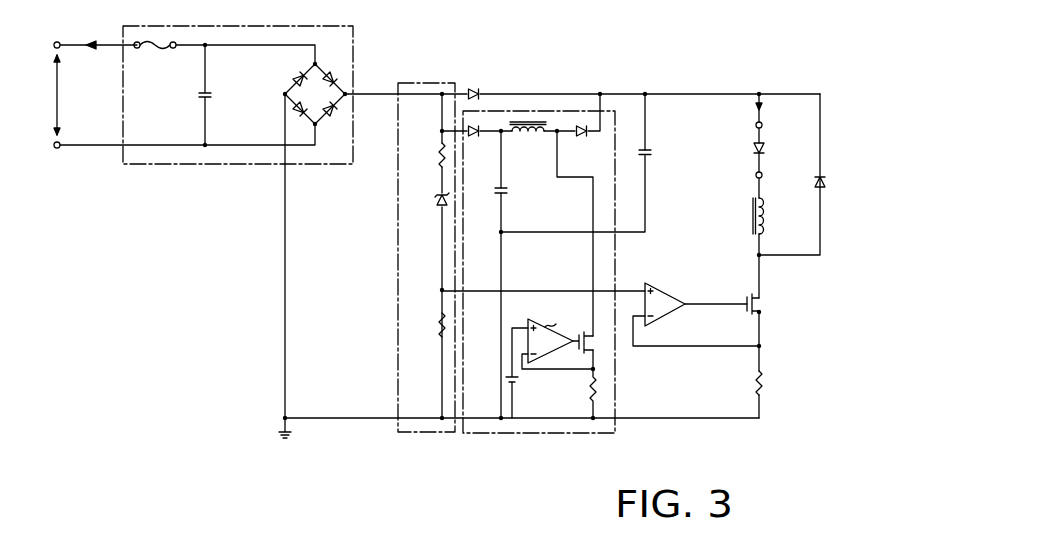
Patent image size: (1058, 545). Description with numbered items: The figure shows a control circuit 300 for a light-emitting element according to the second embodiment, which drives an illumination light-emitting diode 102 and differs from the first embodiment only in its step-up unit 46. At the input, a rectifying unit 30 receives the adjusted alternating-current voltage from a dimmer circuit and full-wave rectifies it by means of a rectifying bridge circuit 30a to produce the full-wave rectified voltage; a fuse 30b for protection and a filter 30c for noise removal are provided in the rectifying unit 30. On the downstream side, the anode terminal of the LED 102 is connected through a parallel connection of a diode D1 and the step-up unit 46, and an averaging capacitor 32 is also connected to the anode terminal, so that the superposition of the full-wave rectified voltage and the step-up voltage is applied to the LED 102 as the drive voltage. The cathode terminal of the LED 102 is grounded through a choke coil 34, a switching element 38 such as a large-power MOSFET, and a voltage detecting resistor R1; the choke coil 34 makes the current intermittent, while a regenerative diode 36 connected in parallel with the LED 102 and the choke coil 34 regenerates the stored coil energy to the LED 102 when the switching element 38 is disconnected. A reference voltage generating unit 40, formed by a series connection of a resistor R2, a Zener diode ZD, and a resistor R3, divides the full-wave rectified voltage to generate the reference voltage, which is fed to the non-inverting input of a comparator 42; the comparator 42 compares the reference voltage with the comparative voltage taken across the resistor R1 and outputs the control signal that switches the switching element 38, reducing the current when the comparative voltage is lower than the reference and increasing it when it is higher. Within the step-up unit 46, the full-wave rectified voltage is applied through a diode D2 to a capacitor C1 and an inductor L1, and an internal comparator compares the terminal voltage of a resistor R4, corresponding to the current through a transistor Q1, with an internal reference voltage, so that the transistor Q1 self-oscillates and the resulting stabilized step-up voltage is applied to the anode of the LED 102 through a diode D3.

The control circuit 300 is at (473, 502).
The rectifying unit 30 is at (176, 165).
The rectifying bridge circuit 30a is at (318, 62).
The fuse 30b is at (159, 52).
The filter 30c is at (213, 96).
The reference voltage generating unit 40 is at (452, 84).
The step-up unit 46 is at (614, 136).
The averaging capacitor 32 is at (648, 148).
The comparator 42 is at (662, 289).
The switching element 38 is at (766, 308).
The light-emitting diode 102 is at (766, 150).
The choke coil 34 is at (766, 217).
The regenerative diode 36 is at (830, 183).
The voltage detecting resistor R1 is at (769, 383).
The resistor R2 is at (432, 155).
The resistor R3 is at (433, 325).
The resistor R4 is at (602, 384).
The capacitor C1 is at (507, 182).
The diode D1 is at (484, 86).
The diode D2 is at (478, 141).
The diode D3 is at (587, 141).
The inductor L1 is at (528, 139).
The Zener diode ZD is at (431, 202).
The transistor Q1 is at (592, 341).